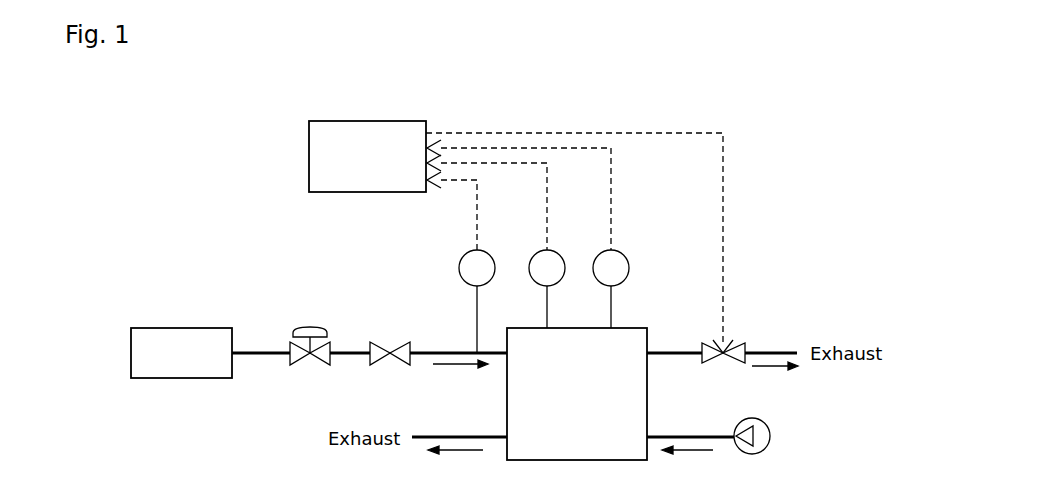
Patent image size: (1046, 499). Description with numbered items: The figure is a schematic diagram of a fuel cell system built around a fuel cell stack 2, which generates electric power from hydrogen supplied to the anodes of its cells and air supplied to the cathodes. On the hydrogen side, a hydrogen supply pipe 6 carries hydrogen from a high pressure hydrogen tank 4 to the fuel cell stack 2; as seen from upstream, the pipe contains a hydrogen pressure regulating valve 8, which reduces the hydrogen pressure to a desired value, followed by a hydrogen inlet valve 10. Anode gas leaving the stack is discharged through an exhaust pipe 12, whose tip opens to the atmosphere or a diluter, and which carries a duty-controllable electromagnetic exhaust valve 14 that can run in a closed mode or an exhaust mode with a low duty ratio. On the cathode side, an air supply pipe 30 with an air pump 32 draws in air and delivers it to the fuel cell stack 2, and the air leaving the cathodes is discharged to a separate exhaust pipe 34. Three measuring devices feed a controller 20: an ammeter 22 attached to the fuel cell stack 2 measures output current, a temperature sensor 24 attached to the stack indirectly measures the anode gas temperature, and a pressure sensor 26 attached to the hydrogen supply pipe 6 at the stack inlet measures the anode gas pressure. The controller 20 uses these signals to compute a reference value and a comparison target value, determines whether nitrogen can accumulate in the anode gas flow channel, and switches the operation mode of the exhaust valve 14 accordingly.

The fuel cell stack 2 is at (627, 327).
The high pressure hydrogen tank 4 is at (182, 328).
The hydrogen supply pipe 6 is at (438, 350).
The hydrogen pressure regulating valve 8 is at (303, 327).
The hydrogen inlet valve 10 is at (378, 341).
The exhaust pipe 12 is at (672, 351).
The exhaust valve 14 is at (735, 343).
The controller 20 is at (365, 121).
The ammeter 22 is at (596, 262).
The temperature sensor 24 is at (533, 262).
The pressure sensor 26 is at (460, 268).
The air supply pipe 30 is at (682, 437).
The air pump 32 is at (770, 433).
The exhaust pipe 34 is at (452, 437).